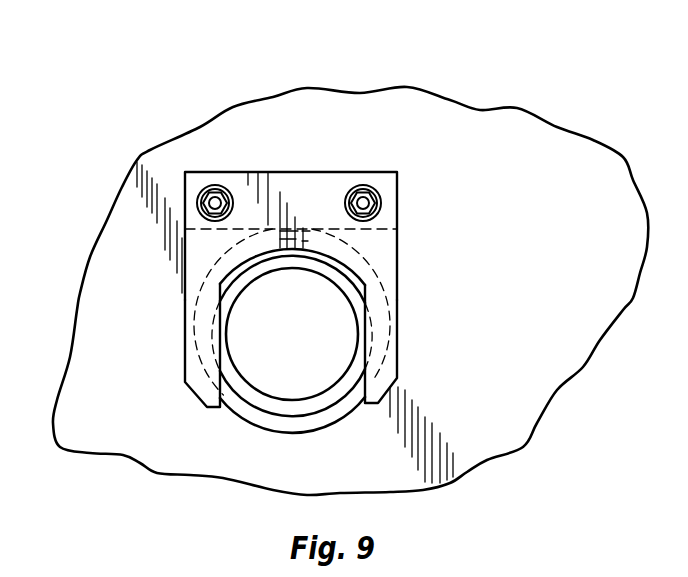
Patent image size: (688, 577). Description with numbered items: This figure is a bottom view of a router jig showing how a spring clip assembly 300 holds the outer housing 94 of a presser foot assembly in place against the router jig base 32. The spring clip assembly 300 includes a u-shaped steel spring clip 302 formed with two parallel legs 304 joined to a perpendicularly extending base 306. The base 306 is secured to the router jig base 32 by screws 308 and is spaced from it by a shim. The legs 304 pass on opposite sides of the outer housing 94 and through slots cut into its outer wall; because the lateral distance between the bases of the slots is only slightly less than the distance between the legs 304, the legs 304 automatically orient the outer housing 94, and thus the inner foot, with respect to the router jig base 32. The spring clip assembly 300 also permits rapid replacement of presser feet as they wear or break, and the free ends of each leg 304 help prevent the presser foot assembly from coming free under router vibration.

The router jig base 32 is at (558, 328).
The outer housing 94 is at (326, 415).
The spring clip assembly 300 is at (350, 277).
The u-shaped steel spring clip 302 is at (378, 250).
The legs 304 is at (198, 270).
The base 306 is at (308, 190).
The screws 308 is at (230, 190).